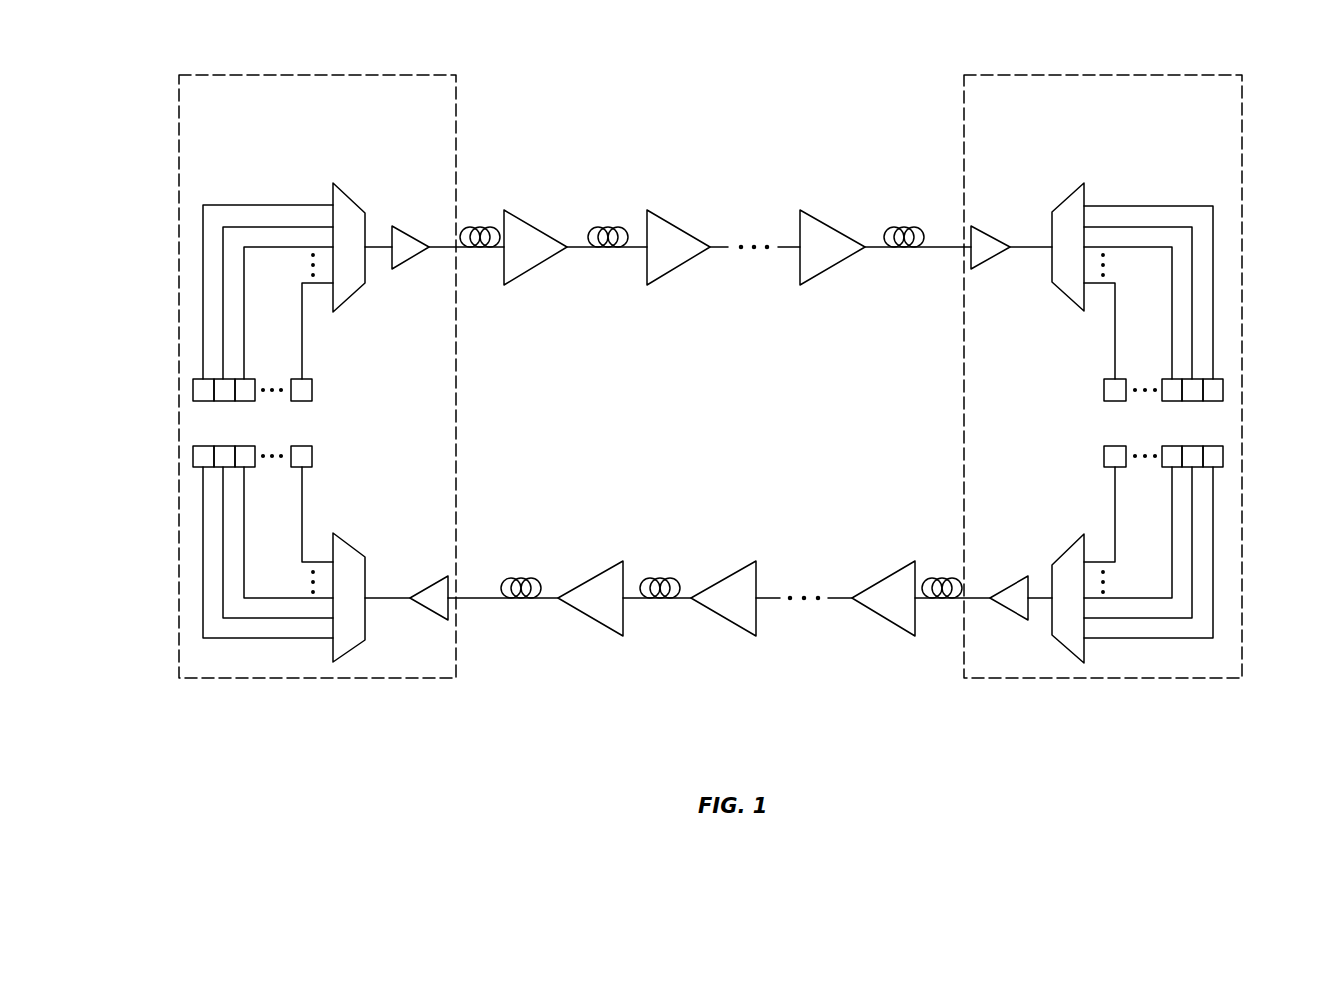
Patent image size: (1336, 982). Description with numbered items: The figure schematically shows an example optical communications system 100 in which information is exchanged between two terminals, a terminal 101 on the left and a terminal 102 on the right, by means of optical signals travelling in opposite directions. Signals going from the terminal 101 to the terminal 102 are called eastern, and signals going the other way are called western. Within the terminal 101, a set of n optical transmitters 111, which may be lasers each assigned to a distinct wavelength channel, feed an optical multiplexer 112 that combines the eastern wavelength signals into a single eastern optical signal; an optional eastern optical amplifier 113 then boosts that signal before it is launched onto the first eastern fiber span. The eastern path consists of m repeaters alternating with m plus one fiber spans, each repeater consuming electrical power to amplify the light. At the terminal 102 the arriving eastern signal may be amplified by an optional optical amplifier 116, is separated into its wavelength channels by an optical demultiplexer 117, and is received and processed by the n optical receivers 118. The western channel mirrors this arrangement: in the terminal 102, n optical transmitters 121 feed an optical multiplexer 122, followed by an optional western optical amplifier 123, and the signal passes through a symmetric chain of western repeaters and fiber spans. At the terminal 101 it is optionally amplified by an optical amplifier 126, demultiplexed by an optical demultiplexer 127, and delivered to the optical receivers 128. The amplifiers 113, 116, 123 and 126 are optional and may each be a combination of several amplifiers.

The optical communications system 100 is at (730, 43).
The terminal 101 is at (386, 111).
The terminal 102 is at (1170, 111).
The optical transmitters 111 is at (299, 376).
The optical multiplexer 112 is at (348, 198).
The eastern optical amplifier 113 is at (412, 234).
The optical amplifier 116 is at (995, 236).
The optical demultiplexer 117 is at (1068, 198).
The optical receivers 118 is at (1124, 376).
The optical transmitters 121 is at (1115, 483).
The optical multiplexer 122 is at (1066, 549).
The western optical amplifier 123 is at (1010, 612).
The optical amplifier 126 is at (430, 612).
The optical demultiplexer 127 is at (352, 548).
The optical receivers 128 is at (288, 483).